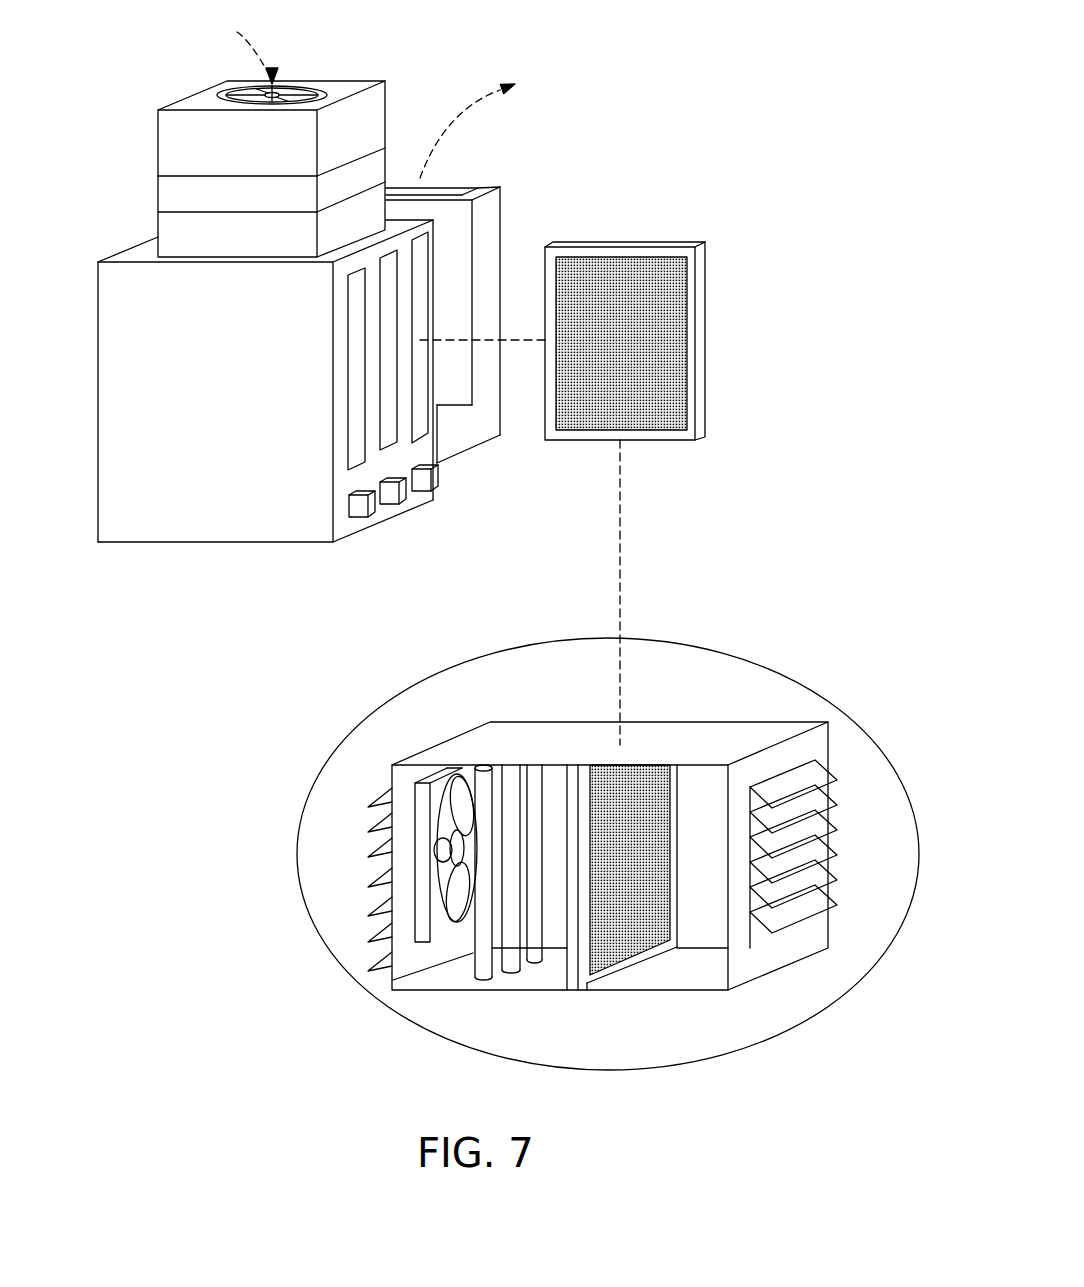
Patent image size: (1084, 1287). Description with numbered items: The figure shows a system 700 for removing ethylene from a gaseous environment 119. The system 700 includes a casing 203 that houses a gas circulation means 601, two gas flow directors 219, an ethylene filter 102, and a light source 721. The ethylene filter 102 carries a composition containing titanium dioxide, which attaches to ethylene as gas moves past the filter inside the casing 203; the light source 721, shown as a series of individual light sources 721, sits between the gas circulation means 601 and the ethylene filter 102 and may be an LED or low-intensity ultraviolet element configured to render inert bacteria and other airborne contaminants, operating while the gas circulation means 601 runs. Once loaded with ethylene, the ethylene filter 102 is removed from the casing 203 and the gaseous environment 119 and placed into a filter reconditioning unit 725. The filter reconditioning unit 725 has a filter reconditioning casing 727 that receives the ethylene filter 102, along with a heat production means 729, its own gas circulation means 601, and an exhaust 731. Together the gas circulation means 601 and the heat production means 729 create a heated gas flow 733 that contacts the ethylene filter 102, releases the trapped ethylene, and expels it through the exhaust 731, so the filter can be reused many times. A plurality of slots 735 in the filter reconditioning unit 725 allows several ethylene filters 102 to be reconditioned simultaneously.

The system 700 is at (795, 54).
The gas circulation means 601 is at (221, 92).
The heated gas flow 733 is at (258, 48).
The heat production means 729 is at (168, 197).
The exhaust 731 is at (443, 192).
The ethylene filter 102 is at (705, 312).
The slots 735 is at (418, 423).
The filter reconditioning casing 727 is at (262, 518).
The filter reconditioning unit 725 is at (133, 542).
The gaseous environment 119 is at (336, 750).
The gas flow directors 219 is at (390, 938).
The casing 203 is at (420, 990).
The light source 721 is at (468, 982).